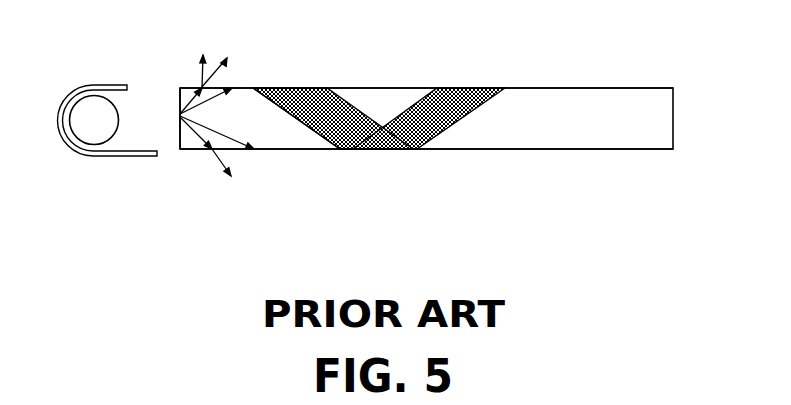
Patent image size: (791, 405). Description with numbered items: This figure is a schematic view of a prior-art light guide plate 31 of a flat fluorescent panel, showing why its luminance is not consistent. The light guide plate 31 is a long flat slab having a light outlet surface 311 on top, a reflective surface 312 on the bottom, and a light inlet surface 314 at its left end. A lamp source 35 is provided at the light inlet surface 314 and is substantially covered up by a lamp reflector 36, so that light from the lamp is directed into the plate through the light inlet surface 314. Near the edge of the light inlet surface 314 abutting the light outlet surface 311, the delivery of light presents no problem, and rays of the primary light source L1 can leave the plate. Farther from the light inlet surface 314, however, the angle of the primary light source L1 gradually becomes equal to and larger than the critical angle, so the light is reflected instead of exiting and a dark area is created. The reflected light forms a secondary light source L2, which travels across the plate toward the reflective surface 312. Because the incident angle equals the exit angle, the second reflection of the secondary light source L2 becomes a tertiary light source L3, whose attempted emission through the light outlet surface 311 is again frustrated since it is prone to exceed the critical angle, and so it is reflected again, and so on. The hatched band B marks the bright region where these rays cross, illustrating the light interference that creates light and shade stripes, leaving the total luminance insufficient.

The light guide plate 31 is at (663, 120).
The light outlet surface 311 is at (597, 87).
The reflective surface 312 is at (403, 149).
The light inlet surface 314 is at (180, 135).
The lamp source 35 is at (82, 105).
The lamp reflector 36 is at (67, 143).
The primary light source L1 is at (203, 68).
The secondary light source L2 is at (294, 116).
The tertiary light source L3 is at (418, 107).
The bright band region B is at (297, 88).